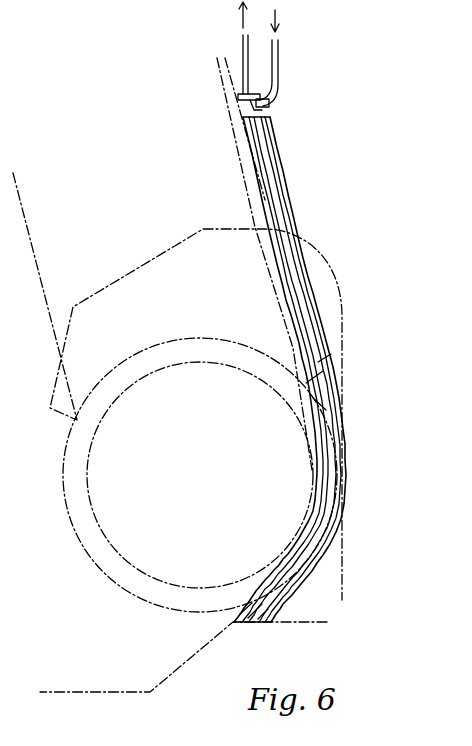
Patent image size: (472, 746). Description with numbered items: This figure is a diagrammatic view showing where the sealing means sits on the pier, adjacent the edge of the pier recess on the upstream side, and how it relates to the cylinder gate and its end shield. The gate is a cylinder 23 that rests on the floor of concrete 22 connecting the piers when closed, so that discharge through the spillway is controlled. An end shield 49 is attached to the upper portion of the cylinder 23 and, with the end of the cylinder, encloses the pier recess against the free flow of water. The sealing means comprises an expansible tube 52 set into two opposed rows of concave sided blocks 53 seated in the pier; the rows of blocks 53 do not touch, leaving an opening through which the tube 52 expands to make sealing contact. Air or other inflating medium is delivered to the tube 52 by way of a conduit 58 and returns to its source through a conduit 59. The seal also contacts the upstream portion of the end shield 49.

The floor of concrete 22 is at (212, 635).
The cylinder 23 is at (70, 516).
The end shield 49 is at (165, 252).
The expansible tube 52 is at (260, 142).
The concave sided blocks 53 is at (265, 180).
The conduit 58 is at (279, 64).
The conduit 59 is at (243, 48).